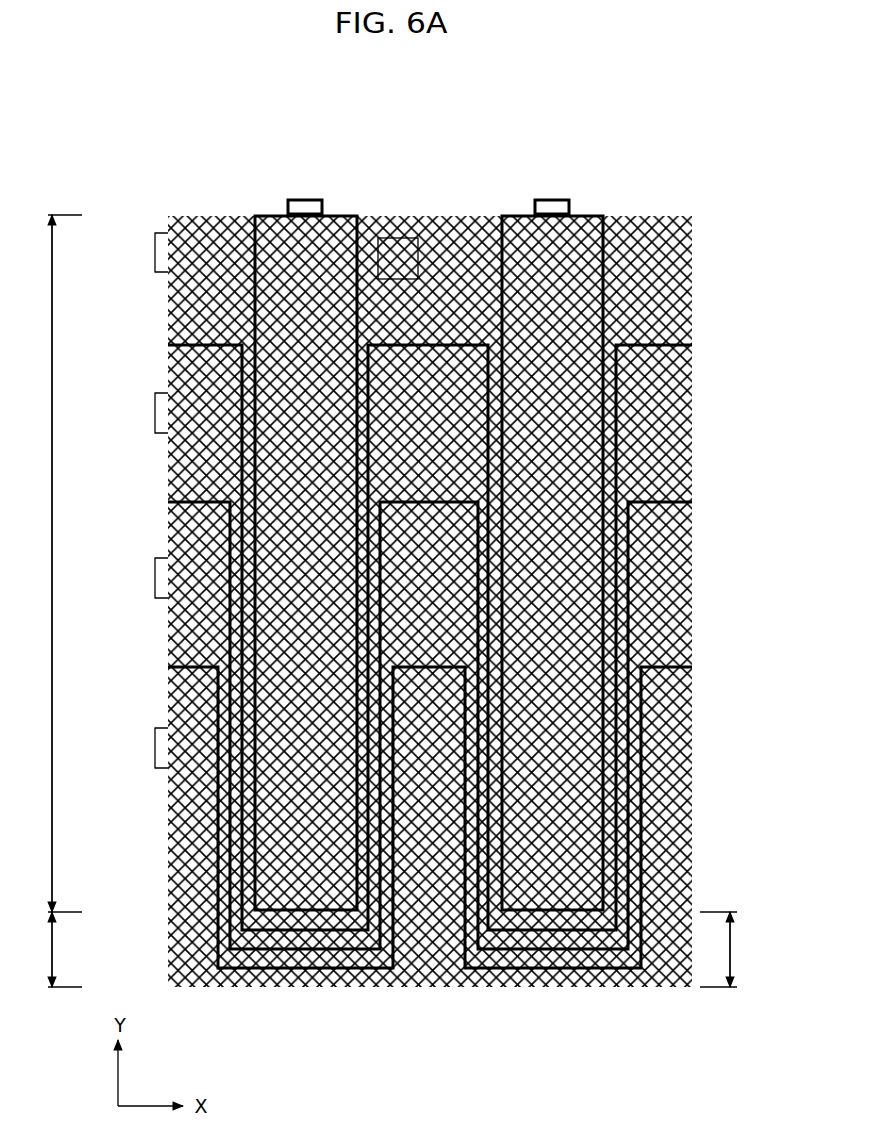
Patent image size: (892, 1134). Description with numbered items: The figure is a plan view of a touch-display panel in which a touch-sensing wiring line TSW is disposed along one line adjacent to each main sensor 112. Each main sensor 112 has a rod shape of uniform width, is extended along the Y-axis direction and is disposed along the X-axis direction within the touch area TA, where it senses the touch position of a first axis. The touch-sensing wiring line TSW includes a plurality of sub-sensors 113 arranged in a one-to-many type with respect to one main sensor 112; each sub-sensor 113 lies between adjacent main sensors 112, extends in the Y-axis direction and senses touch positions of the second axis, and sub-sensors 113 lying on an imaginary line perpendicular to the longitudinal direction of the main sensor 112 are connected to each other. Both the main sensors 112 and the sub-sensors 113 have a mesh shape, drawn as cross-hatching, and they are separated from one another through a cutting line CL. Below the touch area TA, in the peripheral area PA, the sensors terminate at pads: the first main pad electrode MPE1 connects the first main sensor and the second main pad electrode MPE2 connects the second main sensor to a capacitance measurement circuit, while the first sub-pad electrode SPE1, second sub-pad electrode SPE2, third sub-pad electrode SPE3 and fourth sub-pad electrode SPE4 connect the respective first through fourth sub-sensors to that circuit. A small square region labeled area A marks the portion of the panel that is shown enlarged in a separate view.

The touch-sensing wiring line TSW is at (440, 116).
The first main pad electrode MPE1 is at (302, 200).
The second main pad electrode MPE2 is at (550, 200).
The first sub-pad electrode SPE1 is at (155, 253).
The second sub-pad electrode SPE2 is at (155, 413).
The third sub-pad electrode SPE3 is at (155, 578).
The fourth sub-pad electrode SPE4 is at (155, 748).
The area A is at (395, 237).
The cutting line CL is at (502, 253).
The main sensor 112 is at (333, 313).
The sub-sensor 113 is at (673, 708).
The touch area TA is at (49, 563).
The peripheral area PA is at (390, 949).